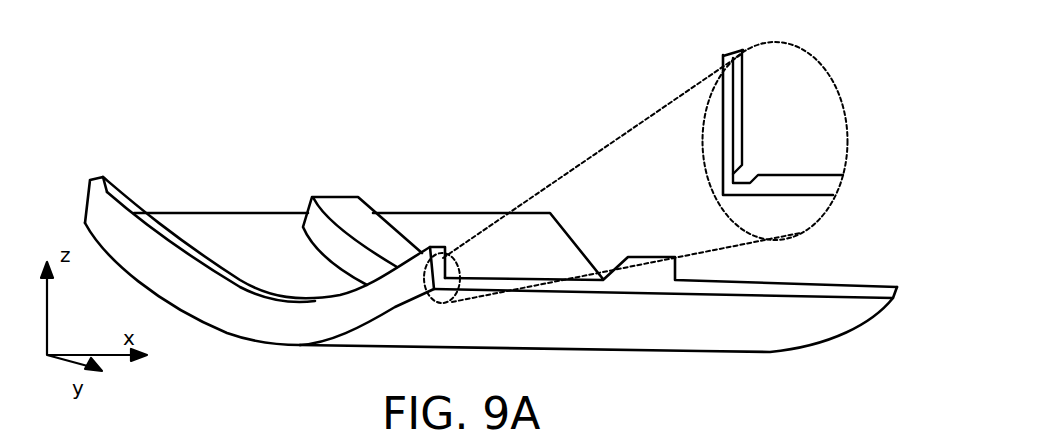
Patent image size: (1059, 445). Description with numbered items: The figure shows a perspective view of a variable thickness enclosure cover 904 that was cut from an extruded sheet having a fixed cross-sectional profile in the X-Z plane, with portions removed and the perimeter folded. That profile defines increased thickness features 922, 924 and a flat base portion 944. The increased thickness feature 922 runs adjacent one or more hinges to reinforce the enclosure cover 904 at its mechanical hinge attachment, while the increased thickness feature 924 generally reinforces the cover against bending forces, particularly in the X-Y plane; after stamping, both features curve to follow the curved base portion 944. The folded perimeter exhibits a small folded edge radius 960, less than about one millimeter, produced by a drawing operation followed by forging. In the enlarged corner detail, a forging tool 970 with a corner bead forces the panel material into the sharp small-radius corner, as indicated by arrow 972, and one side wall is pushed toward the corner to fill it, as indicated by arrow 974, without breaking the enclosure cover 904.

The variable thickness enclosure cover 904 is at (518, 162).
The increased thickness feature 922 is at (107, 188).
The increased thickness feature 924 is at (346, 206).
The flat base portion 944 is at (515, 250).
The small folded edge radius 960 is at (400, 318).
The forging tool 970 is at (832, 83).
The arrow 972 is at (800, 118).
The arrow 974 is at (732, 92).